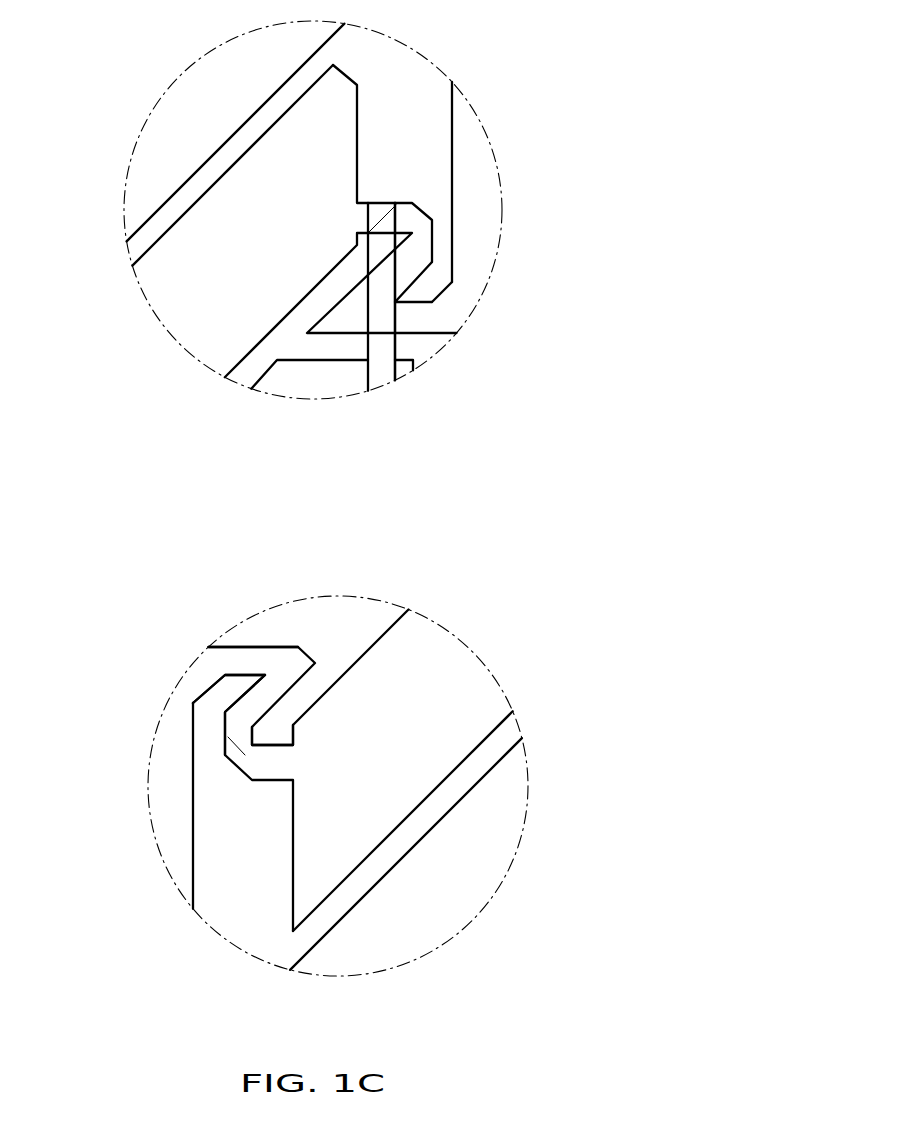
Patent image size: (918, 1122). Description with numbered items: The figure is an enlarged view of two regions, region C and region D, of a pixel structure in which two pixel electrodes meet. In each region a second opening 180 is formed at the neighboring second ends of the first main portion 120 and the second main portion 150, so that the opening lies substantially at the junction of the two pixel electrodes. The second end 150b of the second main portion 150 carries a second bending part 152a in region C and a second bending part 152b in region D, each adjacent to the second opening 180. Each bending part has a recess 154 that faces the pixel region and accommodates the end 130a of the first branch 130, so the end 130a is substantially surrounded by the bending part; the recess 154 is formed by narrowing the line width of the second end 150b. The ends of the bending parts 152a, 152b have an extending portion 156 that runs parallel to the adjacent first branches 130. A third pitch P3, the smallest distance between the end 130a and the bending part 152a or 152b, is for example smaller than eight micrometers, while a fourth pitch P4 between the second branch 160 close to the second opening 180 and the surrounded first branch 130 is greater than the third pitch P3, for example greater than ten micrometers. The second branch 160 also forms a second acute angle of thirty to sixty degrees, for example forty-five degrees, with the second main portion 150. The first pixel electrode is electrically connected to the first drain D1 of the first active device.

The first main portion 120 is at (330, 612).
The first branch 130 is at (247, 378).
The end of the first branch 130a is at (396, 362).
The second main portion 150 is at (393, 62).
The second end of the second main portion 150b is at (407, 127).
The second bending part 152a is at (440, 242).
The second bending part 152b is at (228, 737).
The recess 154 is at (410, 203).
The extending portion 156 is at (403, 325).
The second branch 160 is at (263, 120).
The second opening 180 is at (428, 317).
The third pitch P3 is at (397, 233).
The fourth pitch P4 is at (315, 287).
The first drain D1 is at (386, 385).
The region C is at (125, 195).
The region D is at (438, 612).